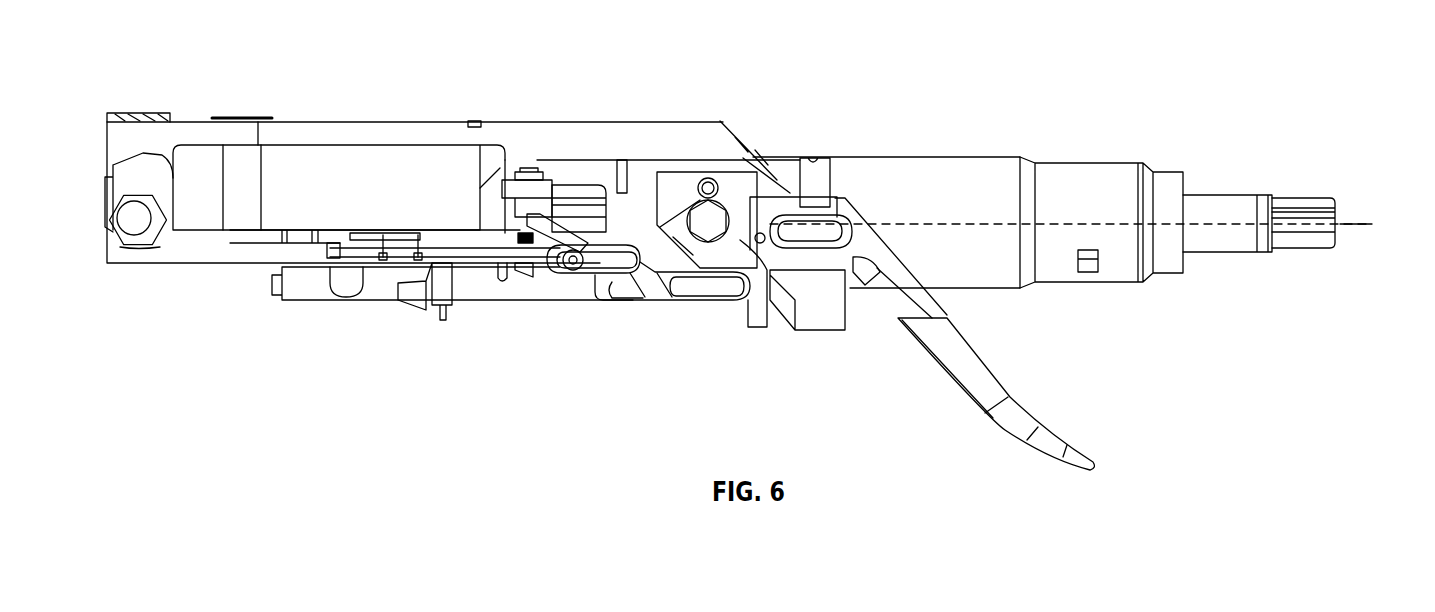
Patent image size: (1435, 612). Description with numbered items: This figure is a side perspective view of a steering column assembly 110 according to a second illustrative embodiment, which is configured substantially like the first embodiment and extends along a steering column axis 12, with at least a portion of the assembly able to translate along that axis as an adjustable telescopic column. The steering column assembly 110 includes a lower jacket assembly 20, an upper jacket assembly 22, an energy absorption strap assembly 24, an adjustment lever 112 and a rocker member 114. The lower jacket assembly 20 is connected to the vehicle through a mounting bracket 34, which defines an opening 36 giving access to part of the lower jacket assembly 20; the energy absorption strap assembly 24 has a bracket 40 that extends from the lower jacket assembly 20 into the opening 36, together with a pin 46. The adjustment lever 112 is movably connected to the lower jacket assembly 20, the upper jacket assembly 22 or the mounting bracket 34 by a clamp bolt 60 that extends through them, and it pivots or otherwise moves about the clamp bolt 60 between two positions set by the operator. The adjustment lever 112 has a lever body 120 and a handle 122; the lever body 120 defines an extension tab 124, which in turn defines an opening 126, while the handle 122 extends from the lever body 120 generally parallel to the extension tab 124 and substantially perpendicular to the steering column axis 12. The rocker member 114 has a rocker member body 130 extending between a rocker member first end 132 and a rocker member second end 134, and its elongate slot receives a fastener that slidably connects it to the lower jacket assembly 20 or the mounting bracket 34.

The steering column assembly 110 is at (1130, 67).
The lower jacket assembly 20 is at (383, 302).
The energy absorption strap assembly 24 is at (558, 182).
The mounting bracket 34 is at (523, 142).
The opening 36 is at (492, 187).
The bracket 40 is at (513, 187).
The rocker member second end 134 is at (552, 230).
The pin 46 is at (528, 270).
The rocker member 114 is at (562, 280).
The rocker member body 130 is at (577, 272).
The rocker member first end 132 is at (715, 290).
The opening 126 is at (727, 305).
The clamp bolt 60 is at (740, 240).
The lever body 120 is at (790, 172).
The extension tab 124 is at (812, 197).
The upper jacket assembly 22 is at (912, 153).
The steering column axis 12 is at (1343, 222).
The adjustment lever 112 is at (922, 380).
The handle 122 is at (967, 368).